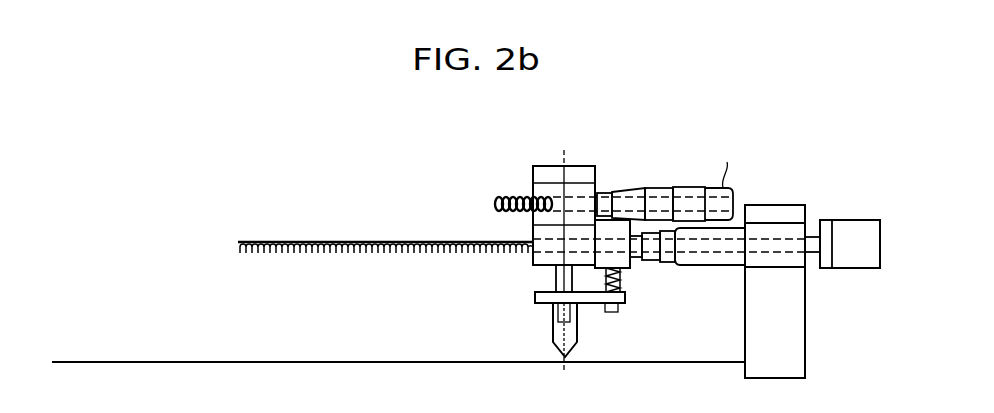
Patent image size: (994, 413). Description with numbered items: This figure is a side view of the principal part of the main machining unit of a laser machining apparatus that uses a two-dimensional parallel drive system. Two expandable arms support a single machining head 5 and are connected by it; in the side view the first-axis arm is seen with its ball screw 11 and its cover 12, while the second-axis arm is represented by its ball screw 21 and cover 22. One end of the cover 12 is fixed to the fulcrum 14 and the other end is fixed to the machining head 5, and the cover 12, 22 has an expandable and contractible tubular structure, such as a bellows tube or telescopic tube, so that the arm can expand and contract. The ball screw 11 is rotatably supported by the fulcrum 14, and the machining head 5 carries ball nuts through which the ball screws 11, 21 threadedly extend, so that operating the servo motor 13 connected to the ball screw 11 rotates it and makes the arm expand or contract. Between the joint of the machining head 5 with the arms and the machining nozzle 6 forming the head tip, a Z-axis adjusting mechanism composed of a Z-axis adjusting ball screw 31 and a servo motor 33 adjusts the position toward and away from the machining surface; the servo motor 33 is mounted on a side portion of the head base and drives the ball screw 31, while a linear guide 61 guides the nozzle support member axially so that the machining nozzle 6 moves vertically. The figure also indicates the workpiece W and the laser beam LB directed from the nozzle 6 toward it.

The machining head 5 is at (533, 168).
The machining nozzle 6 is at (575, 328).
The ball screw 11 is at (335, 256).
The cover 12 is at (710, 265).
The servo motor 13 is at (850, 262).
The fulcrum 14 is at (770, 212).
The ball screw 21 is at (512, 215).
The cover 22 is at (682, 188).
The Z-axis adjusting ball screw 31 is at (618, 288).
The servo motor 33 is at (628, 268).
The linear guide 61 is at (557, 283).
The workpiece W is at (202, 360).
The laser beam LB is at (560, 328).